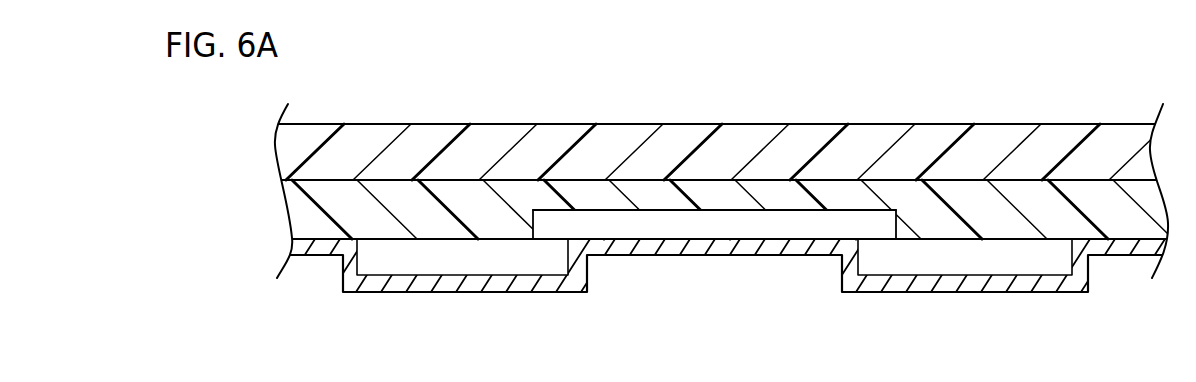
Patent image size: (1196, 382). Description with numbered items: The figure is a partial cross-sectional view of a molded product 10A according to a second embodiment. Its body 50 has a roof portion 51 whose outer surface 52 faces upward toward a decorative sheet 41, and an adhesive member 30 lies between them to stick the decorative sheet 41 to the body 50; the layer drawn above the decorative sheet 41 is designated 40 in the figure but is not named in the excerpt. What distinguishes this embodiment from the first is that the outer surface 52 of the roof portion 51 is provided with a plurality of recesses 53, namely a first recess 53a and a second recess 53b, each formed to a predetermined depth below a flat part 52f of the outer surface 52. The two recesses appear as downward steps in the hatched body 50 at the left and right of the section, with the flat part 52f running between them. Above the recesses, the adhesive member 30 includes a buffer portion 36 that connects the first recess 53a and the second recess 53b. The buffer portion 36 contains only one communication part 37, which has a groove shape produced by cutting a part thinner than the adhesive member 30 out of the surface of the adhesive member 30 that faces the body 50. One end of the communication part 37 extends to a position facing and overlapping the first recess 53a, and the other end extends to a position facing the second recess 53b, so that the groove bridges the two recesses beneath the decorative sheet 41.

The molded product 10A is at (417, 78).
The adhesive member 30 is at (692, 159).
The buffer portion 36 is at (707, 159).
The communication part 37 is at (663, 211).
The second layer 40 is at (725, 119).
The decorative sheet 41 is at (740, 144).
The body 50 is at (697, 286).
The roof portion 51 is at (314, 250).
The outer surface 52 is at (714, 268).
The flat part 52f is at (680, 242).
The recesses 53 is at (714, 289).
The first recess 53a is at (424, 272).
The second recess 53b is at (938, 273).